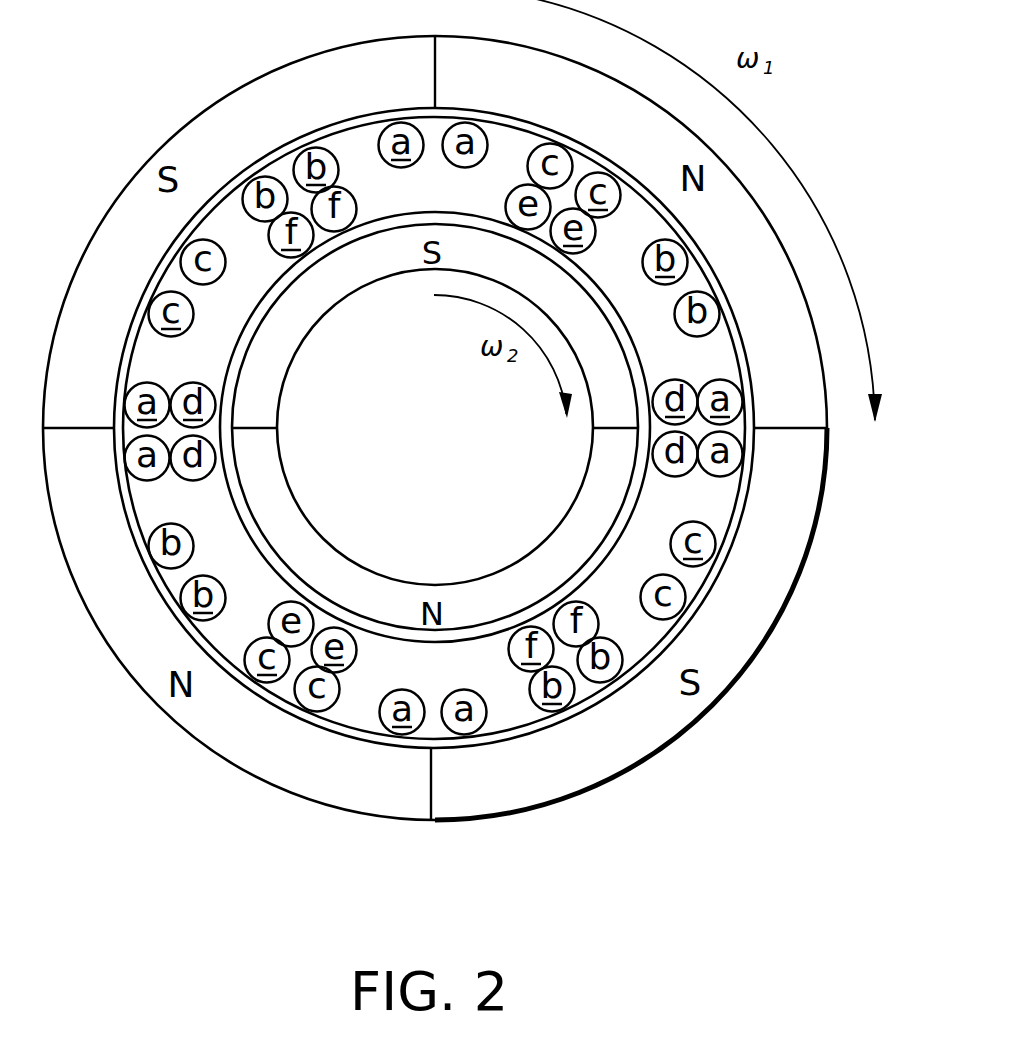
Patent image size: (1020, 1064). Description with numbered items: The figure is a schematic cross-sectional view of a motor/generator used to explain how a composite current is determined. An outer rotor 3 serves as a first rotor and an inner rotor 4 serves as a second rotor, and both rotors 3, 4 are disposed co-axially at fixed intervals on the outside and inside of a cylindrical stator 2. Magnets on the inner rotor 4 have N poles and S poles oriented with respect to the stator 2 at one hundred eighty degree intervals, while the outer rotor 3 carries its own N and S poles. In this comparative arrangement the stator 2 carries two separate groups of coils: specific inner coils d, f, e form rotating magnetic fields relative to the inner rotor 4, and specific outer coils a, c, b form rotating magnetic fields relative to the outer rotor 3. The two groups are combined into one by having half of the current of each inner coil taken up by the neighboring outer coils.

The stator 2 is at (223, 328).
The outer rotor 3 is at (113, 598).
The inner rotor 4 is at (257, 493).